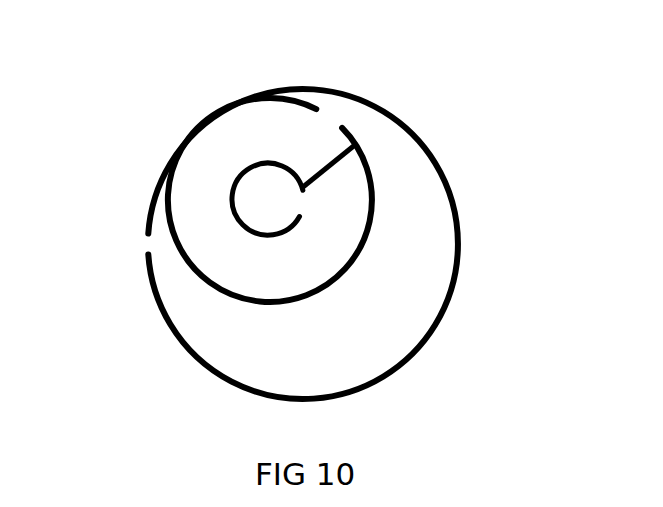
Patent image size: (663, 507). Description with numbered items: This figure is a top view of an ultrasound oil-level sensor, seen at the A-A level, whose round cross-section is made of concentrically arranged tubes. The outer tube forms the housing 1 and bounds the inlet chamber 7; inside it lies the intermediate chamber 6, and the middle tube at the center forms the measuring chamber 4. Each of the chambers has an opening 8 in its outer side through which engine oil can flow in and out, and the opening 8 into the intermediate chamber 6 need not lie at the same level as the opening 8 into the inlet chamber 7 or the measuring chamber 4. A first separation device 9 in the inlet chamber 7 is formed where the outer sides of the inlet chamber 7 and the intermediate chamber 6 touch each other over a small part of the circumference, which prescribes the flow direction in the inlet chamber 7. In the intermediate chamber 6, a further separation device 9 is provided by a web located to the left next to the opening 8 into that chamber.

The housing 1 is at (157, 176).
The measuring chamber 4 is at (267, 198).
The intermediate chamber 6 is at (203, 240).
The inlet chamber 7 is at (263, 358).
The opening 8 is at (328, 120).
The separation device 9 is at (227, 103).